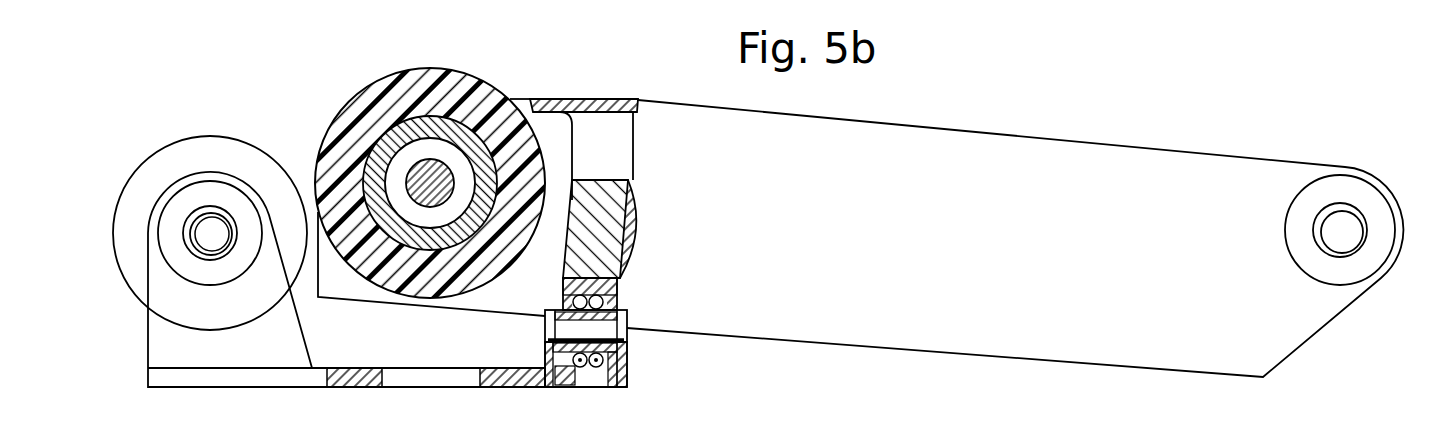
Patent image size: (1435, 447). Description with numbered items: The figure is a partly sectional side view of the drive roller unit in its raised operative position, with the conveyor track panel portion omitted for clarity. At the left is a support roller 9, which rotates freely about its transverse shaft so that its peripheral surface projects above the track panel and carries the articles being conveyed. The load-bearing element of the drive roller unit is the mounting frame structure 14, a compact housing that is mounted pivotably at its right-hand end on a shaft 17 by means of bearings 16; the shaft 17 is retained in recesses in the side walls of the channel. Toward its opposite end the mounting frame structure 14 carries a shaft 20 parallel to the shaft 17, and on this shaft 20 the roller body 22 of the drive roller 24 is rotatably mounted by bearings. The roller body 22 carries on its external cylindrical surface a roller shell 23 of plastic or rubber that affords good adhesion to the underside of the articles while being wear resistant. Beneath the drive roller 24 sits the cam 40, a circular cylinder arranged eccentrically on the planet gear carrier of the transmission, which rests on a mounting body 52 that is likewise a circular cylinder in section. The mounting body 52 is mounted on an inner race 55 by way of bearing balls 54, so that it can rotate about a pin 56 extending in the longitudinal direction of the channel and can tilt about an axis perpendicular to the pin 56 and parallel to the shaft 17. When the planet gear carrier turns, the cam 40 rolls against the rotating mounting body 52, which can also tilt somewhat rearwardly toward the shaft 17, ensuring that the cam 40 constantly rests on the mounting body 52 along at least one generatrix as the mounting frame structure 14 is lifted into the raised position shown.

The support roller 9 is at (188, 146).
The mounting frame structure 14 is at (986, 158).
The bearings 16 is at (1340, 192).
The shaft 17 is at (1345, 235).
The shaft 20 is at (430, 163).
The roller body 22 is at (466, 136).
The roller shell 23 is at (333, 134).
The drive roller 24 is at (366, 78).
The cam 40 is at (592, 203).
The mounting body 52 is at (617, 291).
The bearing balls 54 is at (585, 366).
The inner race 55 is at (622, 355).
The pin 56 is at (622, 329).